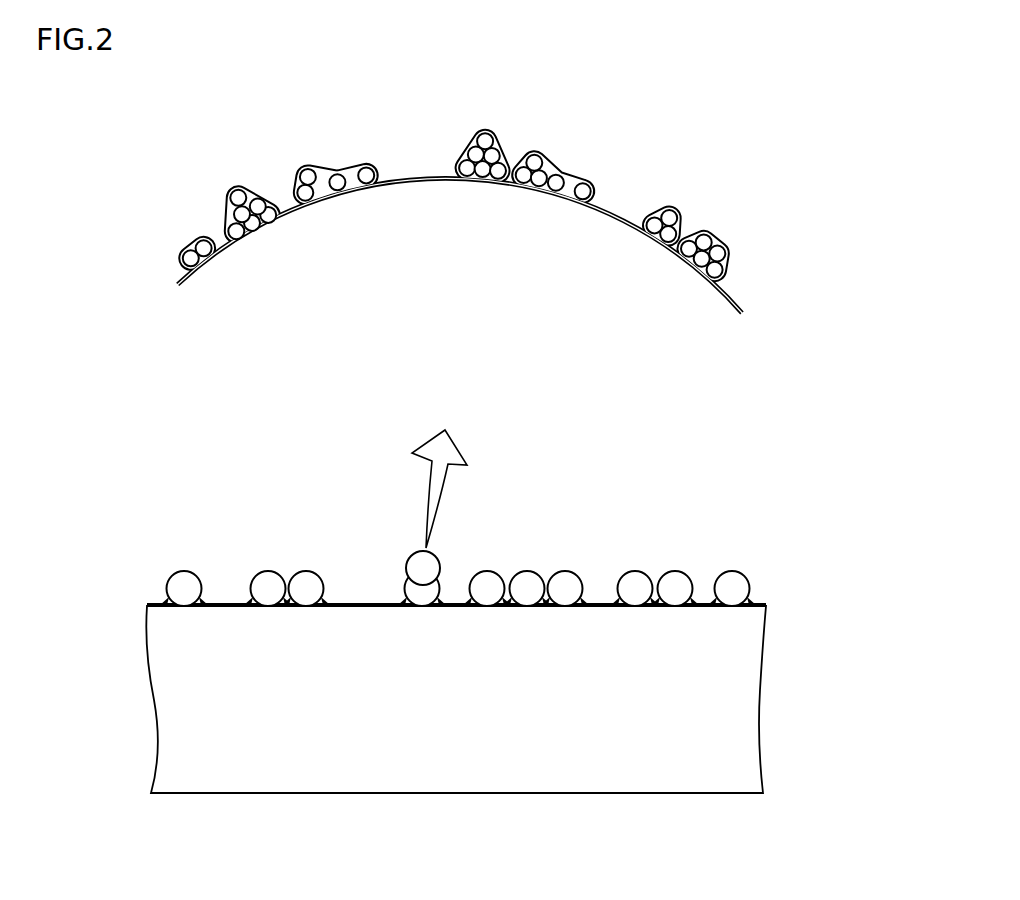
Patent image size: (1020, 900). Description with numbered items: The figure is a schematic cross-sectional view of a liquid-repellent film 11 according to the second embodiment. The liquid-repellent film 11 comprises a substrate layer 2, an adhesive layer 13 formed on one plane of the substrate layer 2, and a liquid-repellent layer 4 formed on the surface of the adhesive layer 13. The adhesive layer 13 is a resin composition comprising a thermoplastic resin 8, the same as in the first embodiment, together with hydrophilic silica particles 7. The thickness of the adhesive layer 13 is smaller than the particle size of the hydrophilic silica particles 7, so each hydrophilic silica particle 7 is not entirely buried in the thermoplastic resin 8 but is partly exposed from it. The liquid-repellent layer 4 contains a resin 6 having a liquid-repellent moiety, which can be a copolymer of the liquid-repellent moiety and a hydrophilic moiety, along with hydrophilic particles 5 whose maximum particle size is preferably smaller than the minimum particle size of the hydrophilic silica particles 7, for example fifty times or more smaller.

The substrate layer 2 is at (410, 767).
The liquid-repellent layer 4 is at (757, 329).
The hydrophilic particles 5 is at (667, 204).
The resin having the liquid-repellent moiety 6 is at (532, 160).
The hydrophilic silica particles 7 is at (640, 584).
The thermoplastic resin 8 is at (745, 607).
The liquid-repellent film 11 is at (571, 508).
The adhesive layer 13 is at (842, 567).